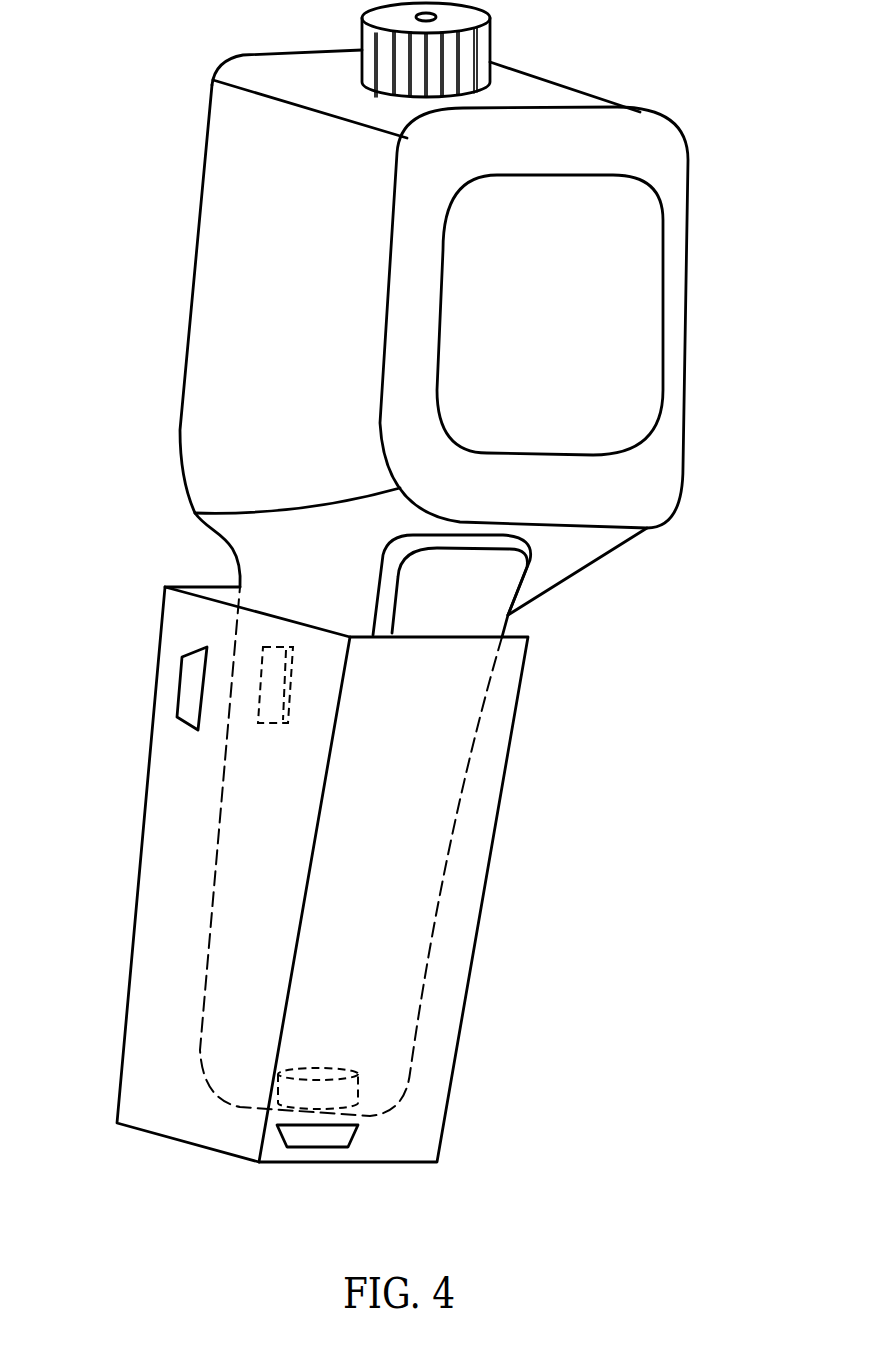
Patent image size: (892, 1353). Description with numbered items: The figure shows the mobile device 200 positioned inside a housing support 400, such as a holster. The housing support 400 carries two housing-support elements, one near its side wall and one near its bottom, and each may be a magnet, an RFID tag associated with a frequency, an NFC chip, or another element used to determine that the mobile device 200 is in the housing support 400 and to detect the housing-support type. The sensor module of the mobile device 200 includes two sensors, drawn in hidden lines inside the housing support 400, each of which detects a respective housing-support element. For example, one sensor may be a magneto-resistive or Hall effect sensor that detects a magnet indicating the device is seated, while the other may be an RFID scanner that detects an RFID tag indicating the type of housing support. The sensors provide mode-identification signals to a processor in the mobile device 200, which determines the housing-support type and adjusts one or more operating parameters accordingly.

The mobile device 200 is at (202, 176).
The housing support 400 is at (138, 856).